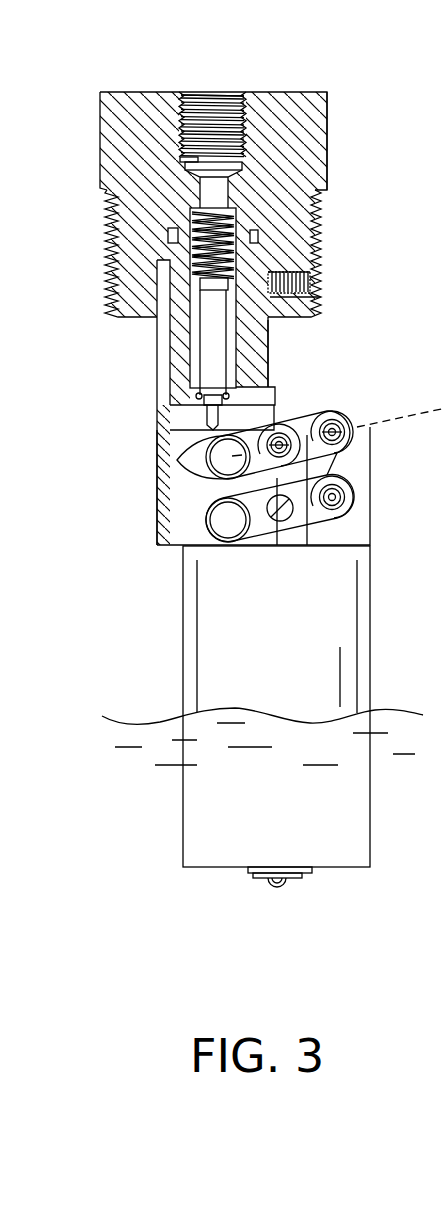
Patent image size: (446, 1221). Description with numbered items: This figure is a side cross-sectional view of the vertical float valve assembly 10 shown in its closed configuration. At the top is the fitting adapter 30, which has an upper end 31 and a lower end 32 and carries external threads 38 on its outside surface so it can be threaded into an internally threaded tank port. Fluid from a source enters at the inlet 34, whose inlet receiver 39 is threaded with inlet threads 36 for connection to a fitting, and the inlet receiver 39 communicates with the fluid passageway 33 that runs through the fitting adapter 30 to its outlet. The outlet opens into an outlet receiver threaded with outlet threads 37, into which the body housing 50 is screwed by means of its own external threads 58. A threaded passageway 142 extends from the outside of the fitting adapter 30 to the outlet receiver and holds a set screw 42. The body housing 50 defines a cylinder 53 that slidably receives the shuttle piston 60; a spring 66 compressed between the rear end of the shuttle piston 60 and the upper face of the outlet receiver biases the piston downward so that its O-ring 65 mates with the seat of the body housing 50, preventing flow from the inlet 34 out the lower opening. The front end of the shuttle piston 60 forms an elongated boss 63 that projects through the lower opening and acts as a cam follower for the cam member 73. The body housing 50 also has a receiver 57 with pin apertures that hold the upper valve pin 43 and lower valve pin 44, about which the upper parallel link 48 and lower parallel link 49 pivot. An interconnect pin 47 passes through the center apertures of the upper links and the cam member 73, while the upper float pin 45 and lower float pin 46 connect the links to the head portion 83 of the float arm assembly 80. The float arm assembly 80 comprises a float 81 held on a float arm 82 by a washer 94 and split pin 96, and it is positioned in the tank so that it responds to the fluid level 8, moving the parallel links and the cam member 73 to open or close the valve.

The fluid level 8 is at (393, 712).
The vertical float valve assembly 10 is at (364, 90).
The fitting adapter 30 is at (110, 143).
The upper end 31 is at (303, 92).
The lower end 32 is at (300, 318).
The fluid passageway 33 is at (218, 193).
The inlet 34 is at (208, 92).
The inlet threads 36 is at (169, 92).
The outlet threads 37 is at (301, 311).
The external threads 38 is at (110, 293).
The inlet receiver 39 is at (228, 113).
The set screw 42 is at (306, 289).
The upper valve pin 43 is at (230, 470).
The lower valve pin 44 is at (227, 530).
The upper float pin 45 is at (335, 428).
The lower float pin 46 is at (337, 499).
The interconnect pin 47 is at (281, 441).
The upper parallel link 48 is at (327, 452).
The lower parallel link 49 is at (320, 517).
The body housing 50 is at (163, 492).
The cylinder 53 is at (240, 364).
The receiver 57 is at (183, 520).
The external threads 58 is at (270, 320).
The shuttle piston 60 is at (198, 358).
The elongated boss 63 is at (206, 428).
The O-ring 65 is at (197, 396).
The spring 66 is at (205, 258).
The cam member 73 is at (182, 465).
The float arm assembly 80 is at (173, 643).
The float 81 is at (363, 618).
The float arm 82 is at (275, 884).
The head portion 83 is at (347, 470).
The washer 94 is at (250, 870).
The split pin 96 is at (297, 878).
The threaded passageway 142 is at (309, 275).